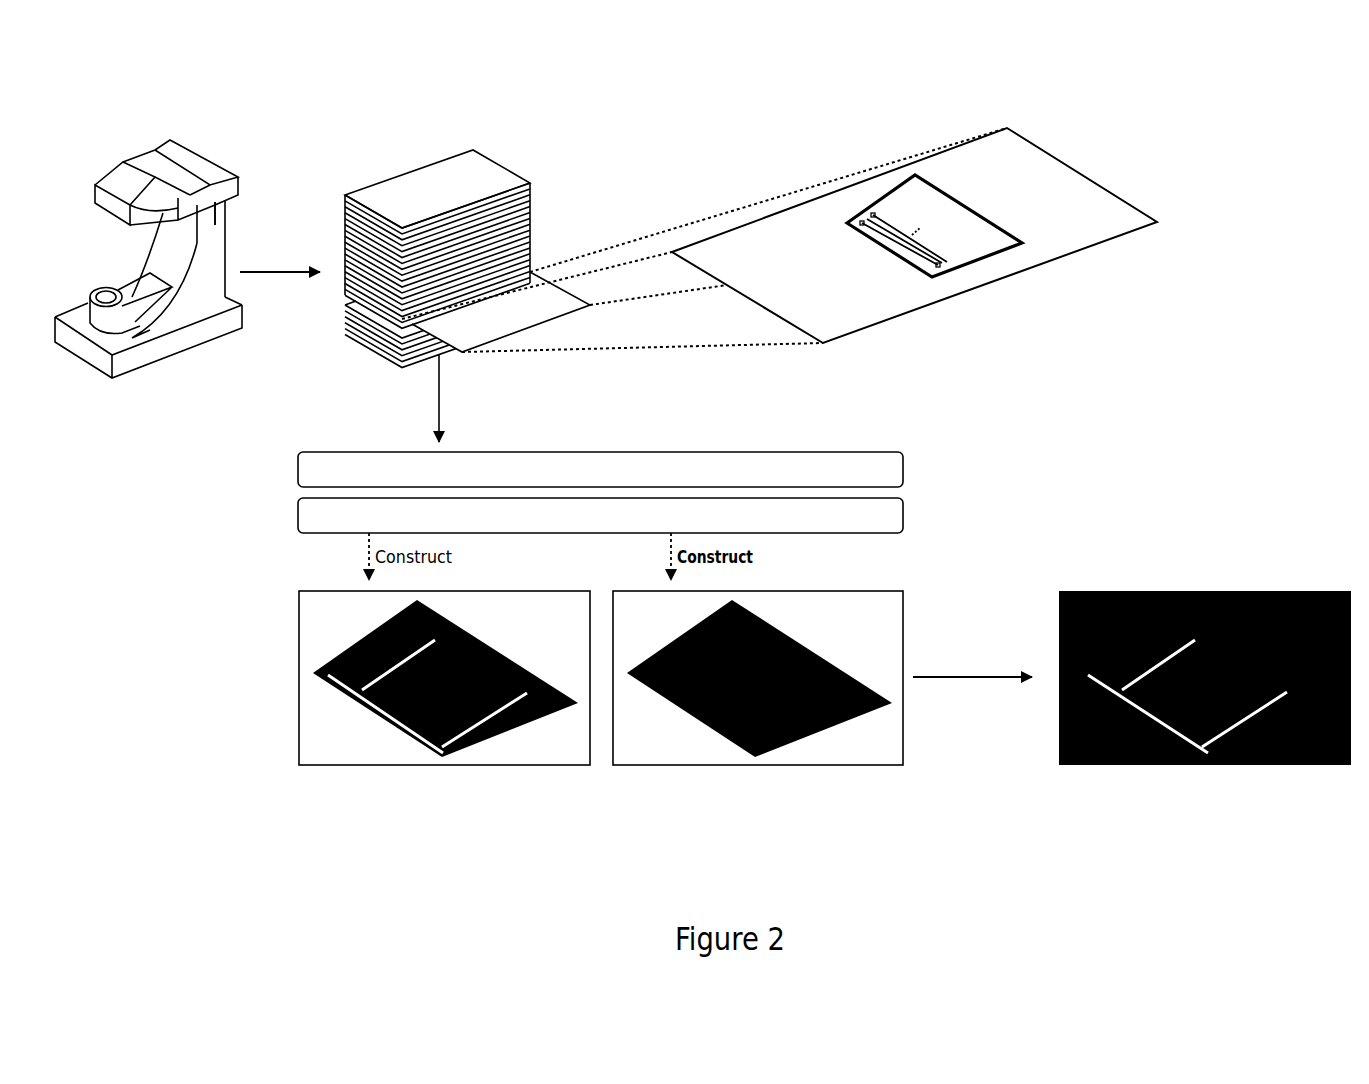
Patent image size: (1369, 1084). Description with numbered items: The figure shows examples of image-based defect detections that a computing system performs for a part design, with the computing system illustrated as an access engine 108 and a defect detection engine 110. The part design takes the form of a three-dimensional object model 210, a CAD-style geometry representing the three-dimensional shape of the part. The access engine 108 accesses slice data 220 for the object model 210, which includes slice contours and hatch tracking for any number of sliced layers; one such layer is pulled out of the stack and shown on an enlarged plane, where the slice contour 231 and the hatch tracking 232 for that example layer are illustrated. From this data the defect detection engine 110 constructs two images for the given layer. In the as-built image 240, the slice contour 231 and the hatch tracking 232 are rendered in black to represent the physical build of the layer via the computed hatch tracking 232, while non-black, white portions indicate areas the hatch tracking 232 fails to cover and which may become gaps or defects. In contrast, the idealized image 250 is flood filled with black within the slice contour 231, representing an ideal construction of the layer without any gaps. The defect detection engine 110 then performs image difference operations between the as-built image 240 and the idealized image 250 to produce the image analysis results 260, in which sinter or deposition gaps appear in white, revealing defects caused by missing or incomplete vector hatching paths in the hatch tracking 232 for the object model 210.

The 3D object model 210 is at (168, 358).
The slice data 220 is at (473, 150).
The slice contour 231 is at (899, 222).
The hatch tracking 232 is at (880, 187).
The access engine 108 is at (888, 481).
The defect detection engine 110 is at (888, 527).
The as-built image 240 is at (322, 766).
The idealized image 250 is at (636, 766).
The image analysis results 260 is at (1078, 766).